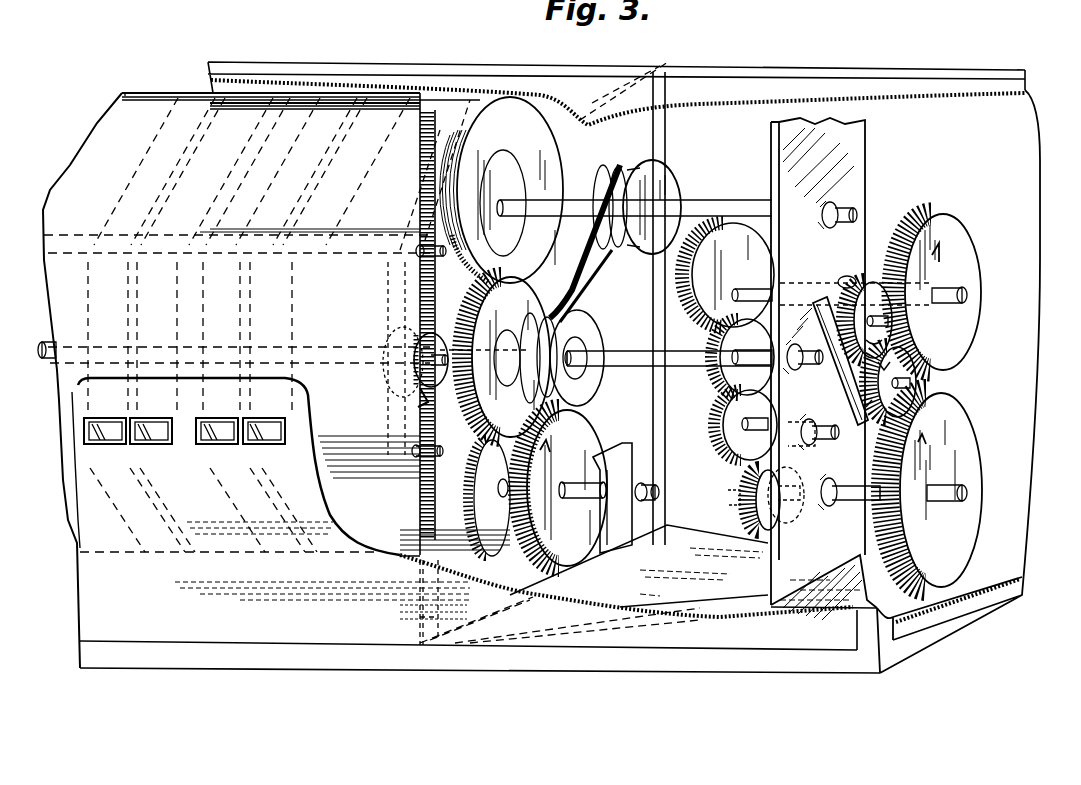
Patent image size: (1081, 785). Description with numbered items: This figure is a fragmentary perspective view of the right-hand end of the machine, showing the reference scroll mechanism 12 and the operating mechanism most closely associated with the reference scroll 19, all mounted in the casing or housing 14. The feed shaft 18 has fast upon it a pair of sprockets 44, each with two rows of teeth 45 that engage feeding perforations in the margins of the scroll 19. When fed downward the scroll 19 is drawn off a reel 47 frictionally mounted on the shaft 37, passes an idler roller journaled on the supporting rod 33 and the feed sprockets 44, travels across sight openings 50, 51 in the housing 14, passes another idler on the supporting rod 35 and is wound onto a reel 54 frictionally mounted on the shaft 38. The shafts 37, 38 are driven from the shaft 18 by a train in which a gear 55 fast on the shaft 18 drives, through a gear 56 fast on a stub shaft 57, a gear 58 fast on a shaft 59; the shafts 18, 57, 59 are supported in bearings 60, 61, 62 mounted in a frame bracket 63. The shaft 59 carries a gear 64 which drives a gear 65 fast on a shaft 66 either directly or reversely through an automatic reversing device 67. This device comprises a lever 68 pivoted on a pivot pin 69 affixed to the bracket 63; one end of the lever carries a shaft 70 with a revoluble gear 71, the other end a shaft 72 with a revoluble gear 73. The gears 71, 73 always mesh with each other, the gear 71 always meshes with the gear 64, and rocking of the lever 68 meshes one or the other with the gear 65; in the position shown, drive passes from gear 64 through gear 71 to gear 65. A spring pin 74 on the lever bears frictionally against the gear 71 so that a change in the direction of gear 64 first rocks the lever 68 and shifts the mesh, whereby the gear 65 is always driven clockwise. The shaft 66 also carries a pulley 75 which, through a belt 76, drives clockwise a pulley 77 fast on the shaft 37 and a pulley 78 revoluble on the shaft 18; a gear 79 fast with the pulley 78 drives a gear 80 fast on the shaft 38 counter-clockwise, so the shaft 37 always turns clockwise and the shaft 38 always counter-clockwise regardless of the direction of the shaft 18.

The reference scroll mechanism 12 is at (155, 78).
The casing or housing 14 is at (346, 62).
The feed shaft 18 is at (42, 344).
The reference scroll 19 is at (98, 122).
The supporting rod 33 is at (450, 258).
The supporting rod 35 is at (433, 457).
The revoluble shaft 37 is at (570, 198).
The revoluble shaft 38 is at (660, 494).
The sprocket 44 is at (395, 330).
The teeth 45 is at (434, 376).
The reel 47 is at (545, 142).
The sight opening 50 is at (168, 458).
The sight opening 51 is at (285, 458).
The reel 54 is at (480, 548).
The gear 55 is at (720, 382).
The gear 56 is at (722, 438).
The stub shaft 57 is at (738, 448).
The gear 58 is at (750, 513).
The shaft 59 is at (845, 545).
The bearing 60 is at (803, 345).
The bearing 61 is at (811, 423).
The bearing 62 is at (830, 508).
The frame bracket 63 is at (865, 142).
The gear 64 is at (965, 462).
The gear 65 is at (963, 250).
The shaft 66 is at (970, 296).
The automatic reversing device 67 is at (942, 391).
The lever 68 is at (837, 282).
The pivot pin 69 is at (840, 372).
The shaft 70 is at (917, 364).
The gear 71 is at (895, 402).
The shaft 72 is at (893, 320).
The gear 73 is at (864, 262).
The spring pin 74 is at (903, 357).
The pulley 75 is at (740, 225).
The belt 76 is at (585, 288).
The pulley 77 is at (673, 180).
The pulley 78 is at (598, 328).
The gear 79 is at (512, 292).
The gear 80 is at (600, 440).